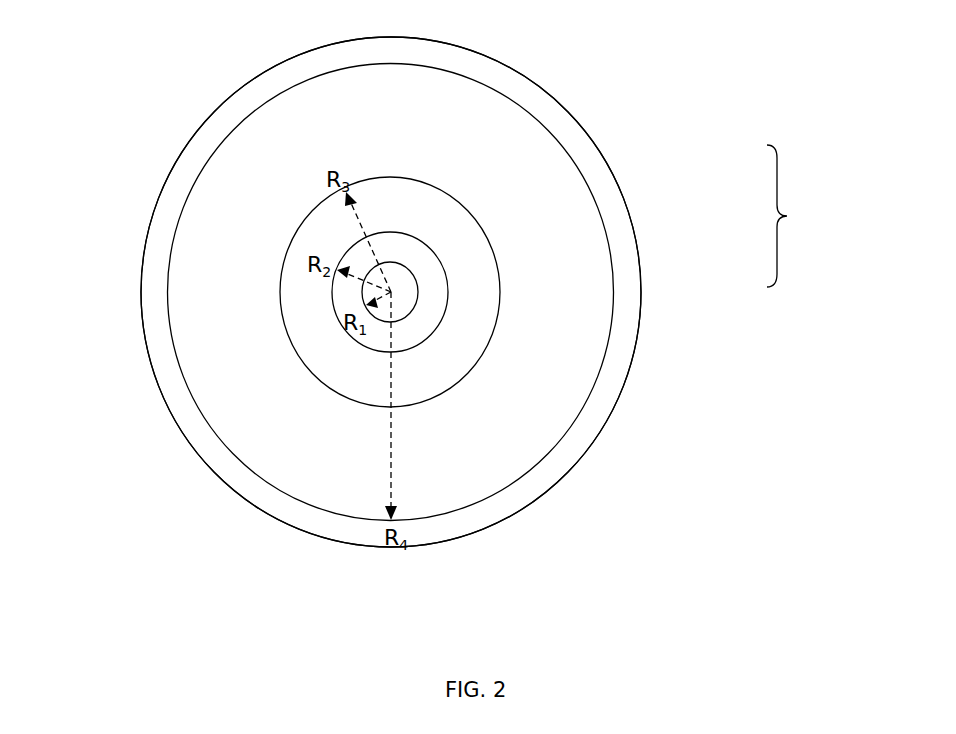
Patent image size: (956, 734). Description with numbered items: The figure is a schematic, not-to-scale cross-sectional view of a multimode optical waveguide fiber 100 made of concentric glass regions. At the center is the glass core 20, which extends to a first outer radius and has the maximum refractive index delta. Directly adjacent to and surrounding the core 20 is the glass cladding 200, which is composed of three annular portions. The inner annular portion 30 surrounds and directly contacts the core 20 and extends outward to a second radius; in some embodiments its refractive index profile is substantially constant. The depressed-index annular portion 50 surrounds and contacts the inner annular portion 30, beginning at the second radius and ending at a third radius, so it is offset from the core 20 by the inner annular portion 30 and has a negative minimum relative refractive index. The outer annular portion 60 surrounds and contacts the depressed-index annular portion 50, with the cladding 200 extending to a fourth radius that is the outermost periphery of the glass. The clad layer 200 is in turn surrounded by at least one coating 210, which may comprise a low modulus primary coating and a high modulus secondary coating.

The optical waveguide fiber 100 is at (104, 172).
The coating 210 is at (167, 384).
The outer annular portion 60 is at (525, 217).
The depressed-index annular portion 50 is at (452, 257).
The inner annular portion 30 is at (432, 297).
The cladding 200 is at (812, 216).
The core 20 is at (405, 300).